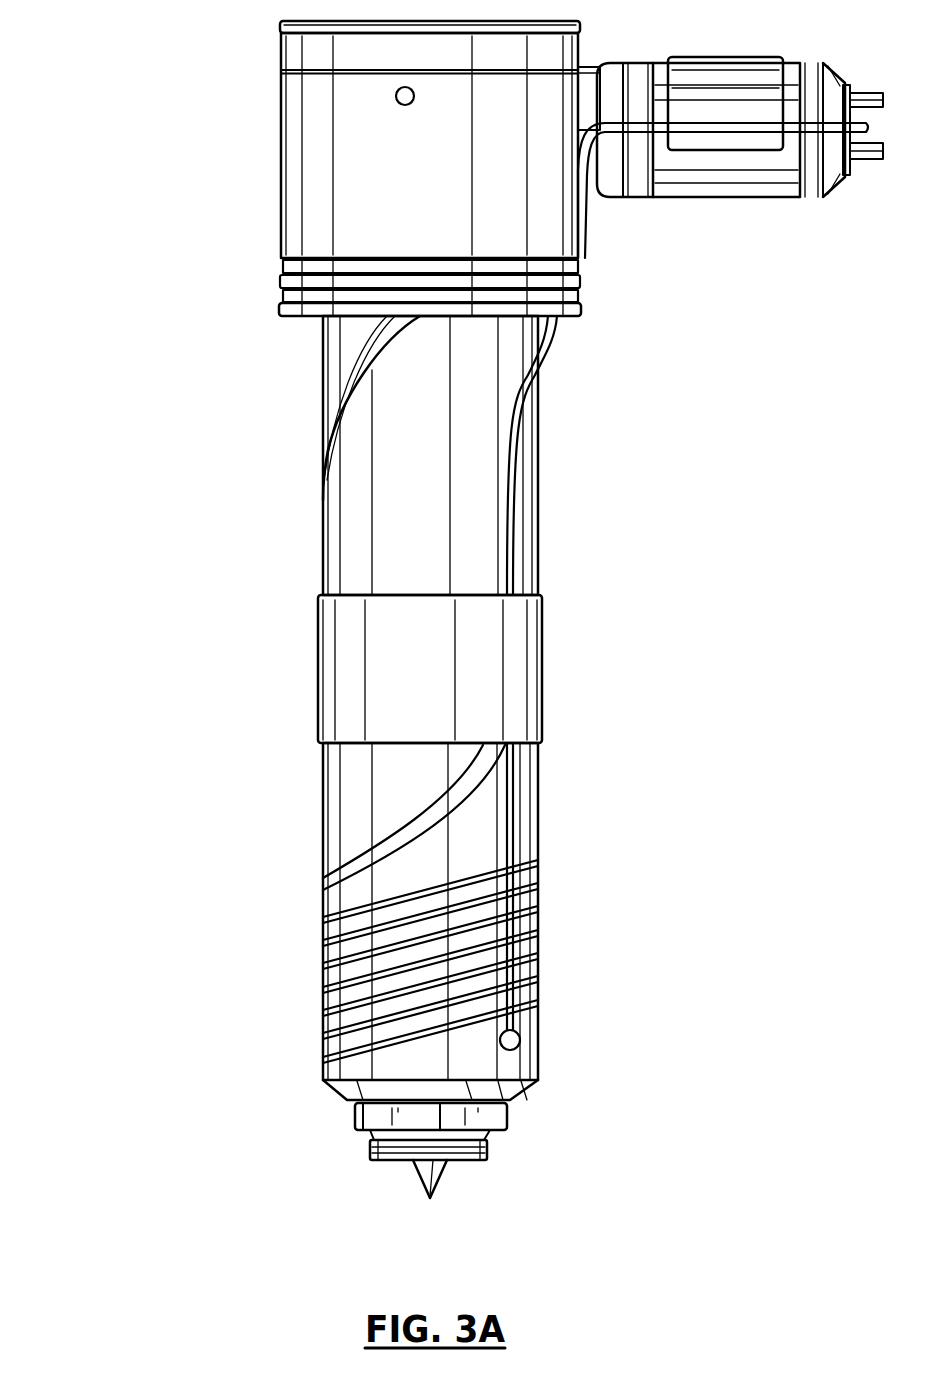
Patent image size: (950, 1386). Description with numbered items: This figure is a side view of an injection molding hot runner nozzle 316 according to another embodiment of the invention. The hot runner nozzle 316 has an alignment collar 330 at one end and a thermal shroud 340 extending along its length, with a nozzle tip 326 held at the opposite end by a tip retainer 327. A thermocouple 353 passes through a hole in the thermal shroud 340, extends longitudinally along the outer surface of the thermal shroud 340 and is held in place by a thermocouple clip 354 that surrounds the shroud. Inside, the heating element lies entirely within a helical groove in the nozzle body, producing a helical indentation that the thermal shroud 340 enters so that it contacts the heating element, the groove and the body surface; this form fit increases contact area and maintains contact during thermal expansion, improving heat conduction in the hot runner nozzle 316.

The hot runner nozzle 316 is at (170, 230).
The alignment collar 330 is at (290, 158).
The thermocouple 353 is at (550, 340).
The thermal shroud 340 is at (355, 520).
The thermocouple clip 354 is at (513, 663).
The tip retainer 327 is at (355, 1117).
The nozzle tip 326 is at (413, 1173).